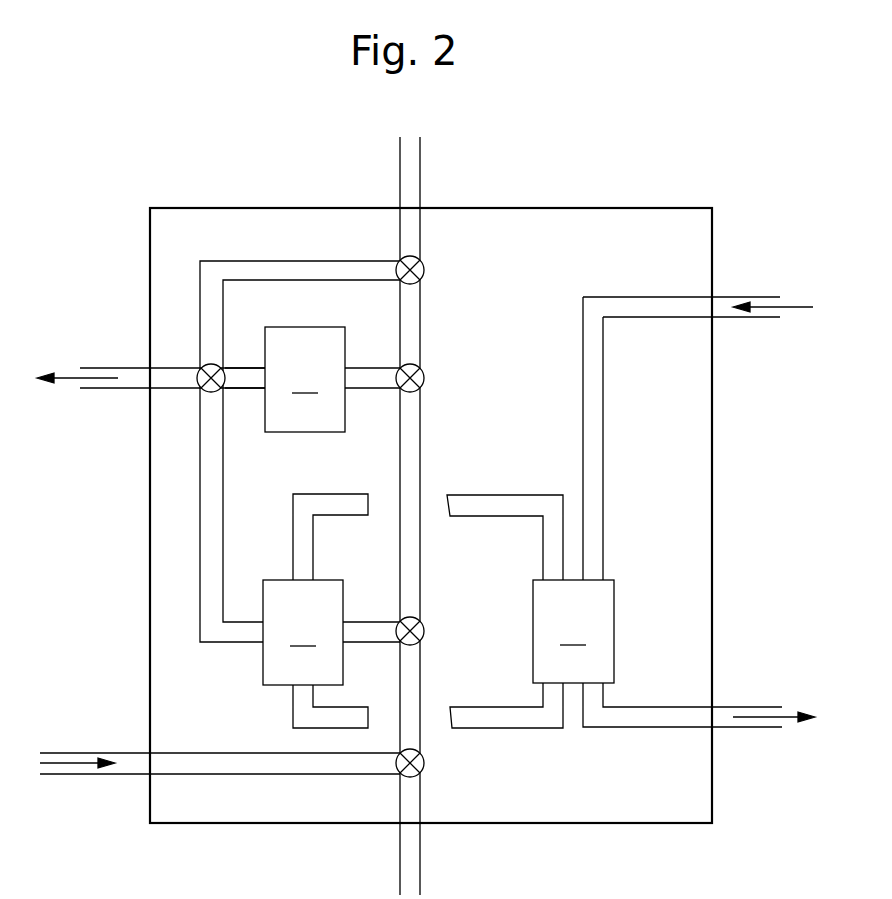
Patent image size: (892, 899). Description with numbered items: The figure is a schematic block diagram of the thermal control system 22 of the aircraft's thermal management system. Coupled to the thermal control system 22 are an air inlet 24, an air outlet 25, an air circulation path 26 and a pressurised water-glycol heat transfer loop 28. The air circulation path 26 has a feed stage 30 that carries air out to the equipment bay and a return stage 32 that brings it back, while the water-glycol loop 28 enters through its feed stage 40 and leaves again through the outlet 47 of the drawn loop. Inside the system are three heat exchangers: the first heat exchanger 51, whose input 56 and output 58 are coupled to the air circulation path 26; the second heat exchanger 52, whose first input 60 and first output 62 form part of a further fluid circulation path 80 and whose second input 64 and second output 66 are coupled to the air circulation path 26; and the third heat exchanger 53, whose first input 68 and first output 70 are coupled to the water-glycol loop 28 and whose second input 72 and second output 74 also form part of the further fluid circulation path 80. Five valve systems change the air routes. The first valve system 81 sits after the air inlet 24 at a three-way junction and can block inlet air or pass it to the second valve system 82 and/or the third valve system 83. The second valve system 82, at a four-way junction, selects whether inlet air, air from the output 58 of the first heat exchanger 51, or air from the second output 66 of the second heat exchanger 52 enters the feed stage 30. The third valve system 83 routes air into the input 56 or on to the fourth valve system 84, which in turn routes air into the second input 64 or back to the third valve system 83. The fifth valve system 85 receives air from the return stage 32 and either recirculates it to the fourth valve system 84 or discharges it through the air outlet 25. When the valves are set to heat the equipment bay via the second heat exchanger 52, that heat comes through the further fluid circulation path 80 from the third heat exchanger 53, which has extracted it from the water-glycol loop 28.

The thermal control system 22 is at (596, 208).
The air inlet 24 is at (413, 153).
The air outlet 25 is at (416, 880).
The air circulation path 26 is at (285, 503).
The pressurised water-glycol heat transfer loop 28 is at (699, 502).
The feed stage 30 is at (90, 368).
The return stage 32 is at (100, 752).
The feed stage 40 is at (735, 297).
The second fluid outlet 47 is at (775, 707).
The first heat exchanger 51 is at (305, 379).
The second heat exchanger 52 is at (303, 632).
The third heat exchanger 53 is at (573, 631).
The input 56 is at (368, 368).
The output 58 is at (243, 368).
The first input 60 is at (300, 693).
The first output 62 is at (293, 533).
The second input 64 is at (365, 620).
The second output 66 is at (243, 640).
The first input 68 is at (592, 575).
The first output 70 is at (593, 693).
The second input 72 is at (547, 563).
The second output 74 is at (548, 693).
The further fluid circulation path 80 is at (381, 615).
The first valve system 81 is at (424, 266).
The second valve system 82 is at (211, 392).
The third valve system 83 is at (424, 378).
The fourth valve system 84 is at (424, 625).
The fifth valve system 85 is at (424, 772).